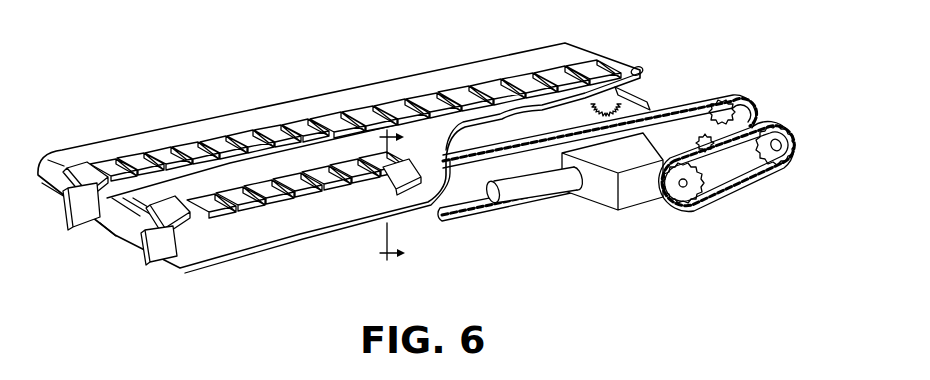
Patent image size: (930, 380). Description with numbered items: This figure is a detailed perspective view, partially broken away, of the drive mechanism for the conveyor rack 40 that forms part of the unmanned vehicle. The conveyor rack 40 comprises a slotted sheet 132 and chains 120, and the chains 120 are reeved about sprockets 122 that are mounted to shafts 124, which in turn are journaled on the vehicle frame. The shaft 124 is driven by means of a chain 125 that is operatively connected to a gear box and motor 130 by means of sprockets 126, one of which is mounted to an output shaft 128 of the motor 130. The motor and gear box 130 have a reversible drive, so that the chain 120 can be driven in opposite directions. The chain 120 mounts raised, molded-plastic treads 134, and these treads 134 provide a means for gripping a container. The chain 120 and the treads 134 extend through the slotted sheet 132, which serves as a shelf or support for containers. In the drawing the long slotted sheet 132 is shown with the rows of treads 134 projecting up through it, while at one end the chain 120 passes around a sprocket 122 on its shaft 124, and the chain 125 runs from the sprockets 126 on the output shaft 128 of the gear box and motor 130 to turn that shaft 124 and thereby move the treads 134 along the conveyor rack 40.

The conveyor rack 40 is at (354, 70).
The slotted sheet 132 is at (112, 150).
The treads 134 is at (243, 135).
The chains 120 is at (473, 218).
The sprockets 122 is at (647, 75).
The shafts 124 is at (655, 100).
The chain 125 is at (723, 193).
The sprockets 126 is at (777, 127).
The output shaft 128 is at (685, 188).
The gear box and motor 130 is at (597, 192).